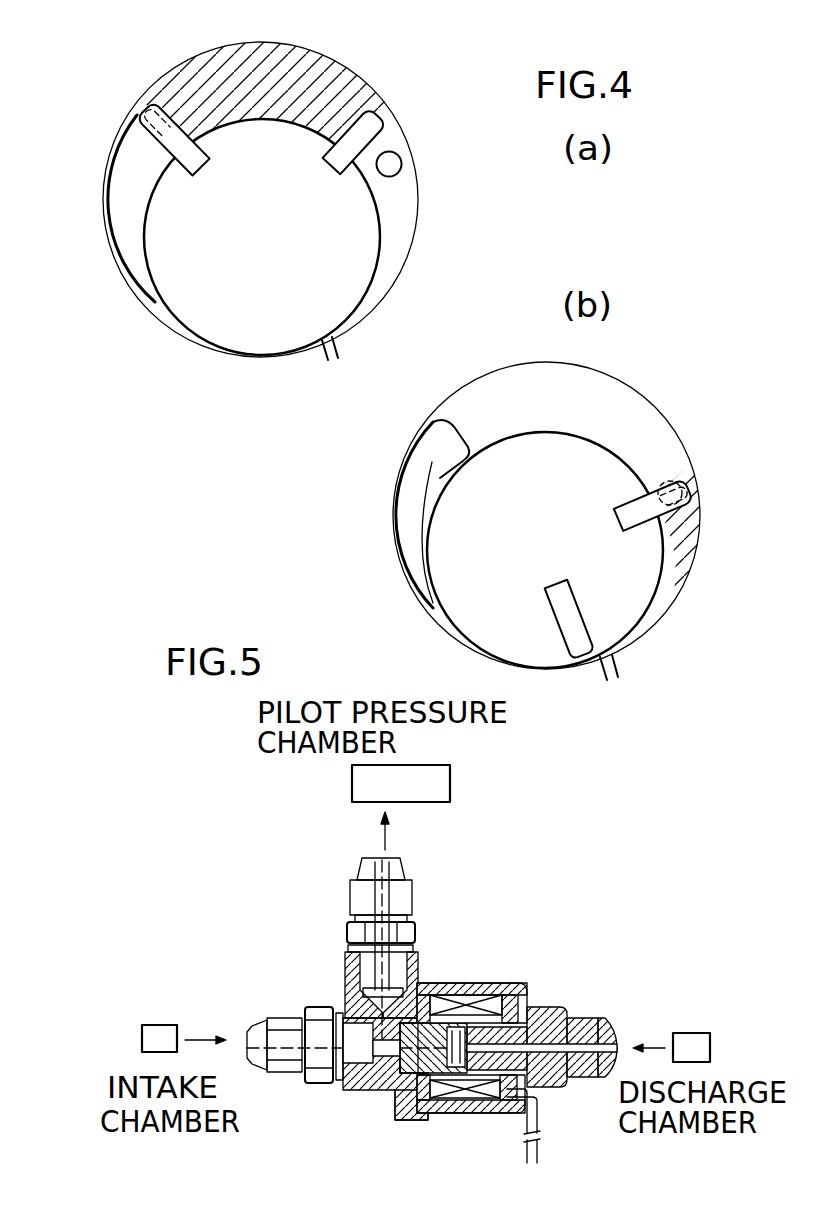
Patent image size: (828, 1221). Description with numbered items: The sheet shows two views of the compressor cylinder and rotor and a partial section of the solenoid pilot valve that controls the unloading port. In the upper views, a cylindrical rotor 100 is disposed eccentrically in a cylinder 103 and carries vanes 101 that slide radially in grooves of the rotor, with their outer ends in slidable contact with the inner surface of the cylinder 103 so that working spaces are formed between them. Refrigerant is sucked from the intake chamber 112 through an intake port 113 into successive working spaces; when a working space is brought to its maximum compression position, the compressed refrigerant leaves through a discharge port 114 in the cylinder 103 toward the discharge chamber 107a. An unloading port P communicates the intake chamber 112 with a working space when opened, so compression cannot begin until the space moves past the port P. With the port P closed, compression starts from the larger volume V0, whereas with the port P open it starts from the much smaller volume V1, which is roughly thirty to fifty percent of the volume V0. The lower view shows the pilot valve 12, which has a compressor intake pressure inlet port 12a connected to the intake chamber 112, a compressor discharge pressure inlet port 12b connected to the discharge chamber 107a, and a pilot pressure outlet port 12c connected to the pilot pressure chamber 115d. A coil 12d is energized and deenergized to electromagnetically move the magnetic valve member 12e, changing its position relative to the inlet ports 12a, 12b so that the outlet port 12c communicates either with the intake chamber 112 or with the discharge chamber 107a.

In FIG. 4, the rotor 100 is at (382, 242).
In FIG. 4, the vanes 101 is at (137, 110).
In FIG. 4, the cylinder 103 is at (417, 194).
In FIG. 4, the intake port 113 is at (125, 208).
In FIG. 4, the discharge port 114 is at (338, 350).
In FIG. 4, the unloading port P is at (402, 163).
In FIG. 4, the working space volume with unloading port closed V0 is at (246, 52).
In FIG. 4, the working space volume with unloading port open V1 is at (683, 592).
In FIG. 5, the pilot valve 12 is at (365, 1092).
In FIG. 5, the compressor intake pressure inlet port 12a is at (285, 1050).
In FIG. 5, the compressor discharge pressure inlet port 12b is at (610, 1020).
In FIG. 5, the pilot pressure outlet port 12c is at (400, 863).
In FIG. 5, the coil 12d is at (492, 1003).
In FIG. 5, the valve member 12e is at (440, 1113).
In FIG. 5, the intake chamber 112 is at (162, 1035).
In FIG. 5, the discharge chamber 107a is at (698, 1047).
In FIG. 5, the pilot pressure chamber 115d is at (441, 786).